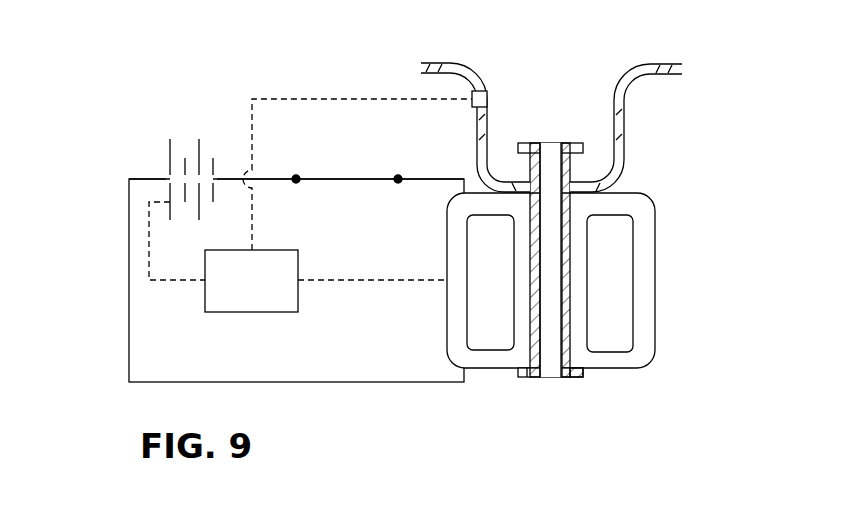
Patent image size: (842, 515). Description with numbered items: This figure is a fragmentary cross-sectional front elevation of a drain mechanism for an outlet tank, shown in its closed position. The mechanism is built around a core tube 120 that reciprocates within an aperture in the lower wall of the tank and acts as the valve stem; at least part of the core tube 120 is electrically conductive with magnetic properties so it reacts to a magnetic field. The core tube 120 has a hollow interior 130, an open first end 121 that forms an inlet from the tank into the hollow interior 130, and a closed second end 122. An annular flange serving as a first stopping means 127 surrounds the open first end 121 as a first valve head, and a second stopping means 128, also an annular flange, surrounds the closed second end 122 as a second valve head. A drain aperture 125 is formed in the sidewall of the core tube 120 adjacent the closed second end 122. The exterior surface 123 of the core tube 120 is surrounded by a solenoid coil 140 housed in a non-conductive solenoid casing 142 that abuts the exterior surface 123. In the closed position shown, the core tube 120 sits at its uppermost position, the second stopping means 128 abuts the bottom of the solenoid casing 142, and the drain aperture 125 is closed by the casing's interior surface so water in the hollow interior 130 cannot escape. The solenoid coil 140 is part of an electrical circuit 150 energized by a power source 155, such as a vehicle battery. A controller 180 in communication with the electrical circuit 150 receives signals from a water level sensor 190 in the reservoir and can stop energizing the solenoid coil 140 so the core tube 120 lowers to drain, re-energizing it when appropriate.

The core tube 120 is at (639, 265).
The open first end 121 is at (552, 143).
The closed second end 122 is at (550, 372).
The exterior surface 123 is at (572, 252).
The drain aperture 125 is at (570, 355).
The first stopping means 127 is at (528, 143).
The second stopping means 128 is at (527, 372).
The hollow interior 130 is at (552, 325).
The solenoid coil 140 is at (510, 297).
The solenoid casing 142 is at (647, 231).
The electrical circuit 150 is at (239, 220).
The power source 155 is at (183, 124).
The controller 180 is at (269, 292).
The water level sensor 190 is at (472, 97).